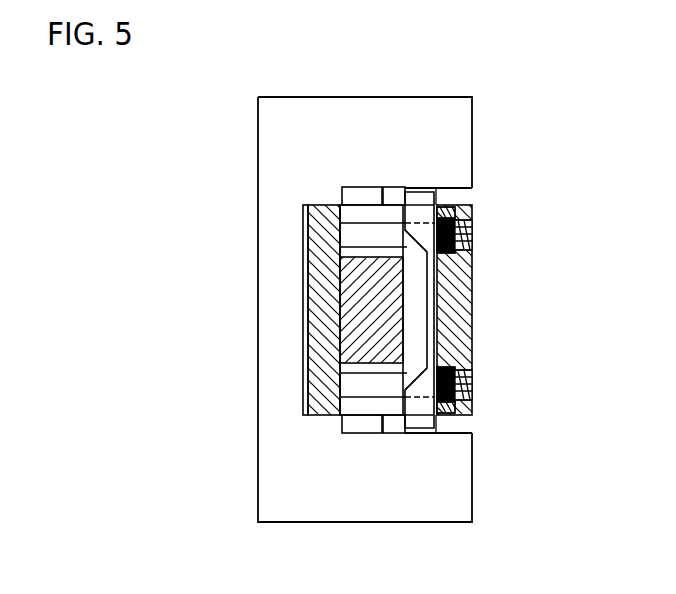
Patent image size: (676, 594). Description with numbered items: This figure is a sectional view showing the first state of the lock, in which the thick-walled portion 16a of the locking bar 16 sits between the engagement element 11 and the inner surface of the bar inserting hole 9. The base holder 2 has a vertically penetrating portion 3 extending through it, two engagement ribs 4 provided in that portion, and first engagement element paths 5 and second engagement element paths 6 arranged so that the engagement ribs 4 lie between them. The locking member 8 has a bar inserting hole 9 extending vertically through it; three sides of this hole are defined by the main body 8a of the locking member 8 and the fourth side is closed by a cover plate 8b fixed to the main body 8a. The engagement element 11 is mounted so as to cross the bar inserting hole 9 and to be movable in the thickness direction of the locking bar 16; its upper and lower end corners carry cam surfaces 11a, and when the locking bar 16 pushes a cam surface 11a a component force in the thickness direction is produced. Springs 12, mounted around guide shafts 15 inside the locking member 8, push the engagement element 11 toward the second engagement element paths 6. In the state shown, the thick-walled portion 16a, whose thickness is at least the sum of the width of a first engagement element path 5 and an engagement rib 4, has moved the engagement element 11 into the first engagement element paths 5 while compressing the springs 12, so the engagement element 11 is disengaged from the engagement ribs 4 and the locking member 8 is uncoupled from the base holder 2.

The base holder 2 is at (257, 437).
The vertically penetrating portion 3 is at (307, 380).
The engagement rib 4 is at (395, 193).
The first engagement element path 5 is at (458, 193).
The second engagement element path 6 is at (360, 192).
The locking member 8 is at (364, 351).
The main body 8a is at (458, 285).
The cover plate 8b is at (318, 222).
The bar inserting hole 9 is at (343, 282).
The engagement element 11 is at (440, 340).
The cam surface 11a is at (418, 331).
The spring 12 is at (463, 233).
The guide shaft 15 is at (387, 235).
The locking bar 16 is at (347, 317).
The thick-walled portion 16a is at (355, 337).